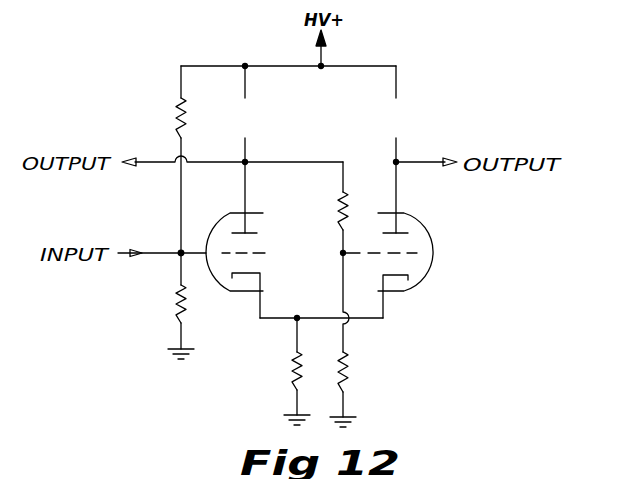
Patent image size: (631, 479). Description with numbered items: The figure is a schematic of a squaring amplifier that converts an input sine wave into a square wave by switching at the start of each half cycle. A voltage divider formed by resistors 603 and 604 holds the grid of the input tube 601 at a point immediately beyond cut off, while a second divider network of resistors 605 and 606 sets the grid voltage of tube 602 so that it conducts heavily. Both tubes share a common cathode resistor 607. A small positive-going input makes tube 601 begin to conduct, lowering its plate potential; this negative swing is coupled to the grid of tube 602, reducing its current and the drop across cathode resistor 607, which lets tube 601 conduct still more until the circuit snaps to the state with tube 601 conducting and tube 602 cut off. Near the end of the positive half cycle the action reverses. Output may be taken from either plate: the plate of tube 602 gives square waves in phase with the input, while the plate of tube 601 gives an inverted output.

The tube 601 is at (250, 322).
The tube 602 is at (437, 323).
The resistor 603 is at (177, 121).
The resistor 604 is at (177, 311).
The resistor 605 is at (339, 219).
The resistor 606 is at (349, 383).
The cathode resistor 607 is at (293, 380).